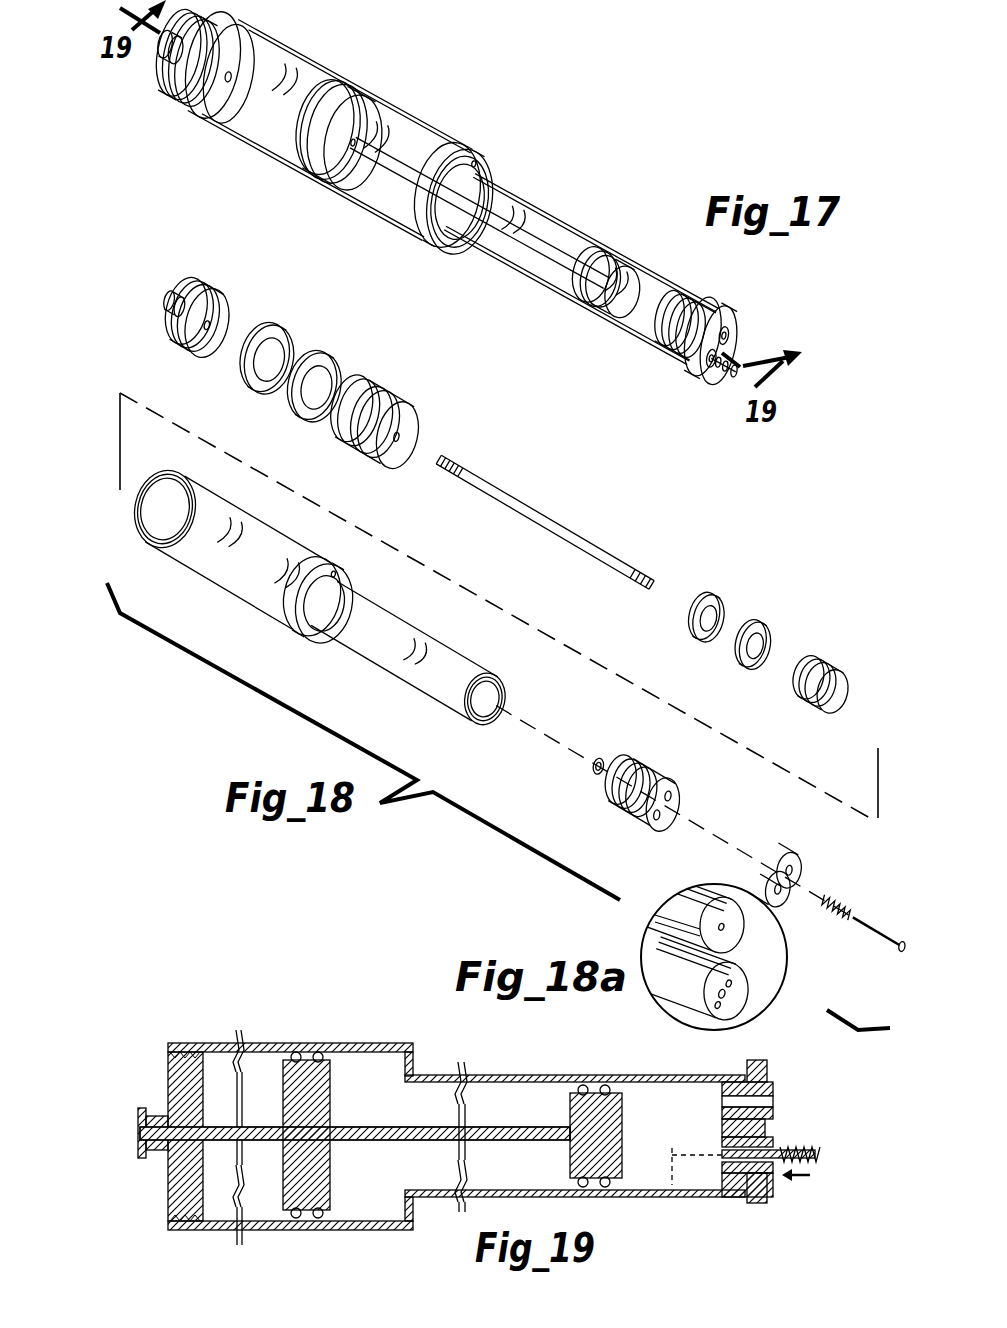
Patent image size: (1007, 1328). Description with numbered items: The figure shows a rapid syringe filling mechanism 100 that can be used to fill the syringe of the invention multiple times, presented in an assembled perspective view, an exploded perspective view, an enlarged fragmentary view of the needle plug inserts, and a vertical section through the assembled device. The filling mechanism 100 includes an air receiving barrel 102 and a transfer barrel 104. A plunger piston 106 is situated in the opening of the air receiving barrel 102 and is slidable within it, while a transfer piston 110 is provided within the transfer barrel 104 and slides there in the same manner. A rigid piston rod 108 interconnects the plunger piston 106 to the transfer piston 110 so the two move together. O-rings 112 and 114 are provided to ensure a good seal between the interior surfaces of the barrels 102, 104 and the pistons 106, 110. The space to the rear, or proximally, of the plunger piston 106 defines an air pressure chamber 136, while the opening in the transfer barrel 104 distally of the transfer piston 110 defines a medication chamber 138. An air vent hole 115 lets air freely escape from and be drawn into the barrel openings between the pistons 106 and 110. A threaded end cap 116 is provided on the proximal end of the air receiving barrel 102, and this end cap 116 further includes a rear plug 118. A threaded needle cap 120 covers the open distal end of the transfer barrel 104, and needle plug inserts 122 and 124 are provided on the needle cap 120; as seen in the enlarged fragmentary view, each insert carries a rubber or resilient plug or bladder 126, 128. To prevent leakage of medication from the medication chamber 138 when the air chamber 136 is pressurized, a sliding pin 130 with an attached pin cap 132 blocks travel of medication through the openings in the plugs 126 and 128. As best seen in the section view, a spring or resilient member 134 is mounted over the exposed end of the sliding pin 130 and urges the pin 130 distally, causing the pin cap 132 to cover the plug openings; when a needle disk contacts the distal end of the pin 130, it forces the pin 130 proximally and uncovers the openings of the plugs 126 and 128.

In FIG. 17, the filling mechanism 100 is at (532, 134).
In FIG. 17, the air receiving barrel 102 is at (395, 35).
In FIG. 18, the air receiving barrel 102 is at (243, 611).
In FIG. 19, the air receiving barrel 102 is at (286, 1042).
In FIG. 17, the transfer barrel 104 is at (652, 272).
In FIG. 18, the transfer barrel 104 is at (406, 672).
In FIG. 19, the transfer barrel 104 is at (552, 1075).
In FIG. 17, the plunger piston 106 is at (354, 175).
In FIG. 18, the plunger piston 106 is at (410, 426).
In FIG. 19, the plunger piston 106 is at (284, 1195).
In FIG. 17, the rigid piston rod 108 is at (525, 247).
In FIG. 18, the rigid piston rod 108 is at (504, 495).
In FIG. 19, the rigid piston rod 108 is at (396, 1141).
In FIG. 17, the transfer piston 110 is at (616, 312).
In FIG. 18, the transfer piston 110 is at (843, 686).
In FIG. 19, the transfer piston 110 is at (623, 1121).
In FIG. 17, the O-rings 112 is at (314, 167).
In FIG. 18, the O-rings 112 is at (316, 368).
In FIG. 19, the O-rings 112 is at (312, 1212).
In FIG. 17, the O-rings 114 is at (602, 296).
In FIG. 18, the O-rings 114 is at (752, 628).
In FIG. 19, the O-rings 114 is at (586, 1188).
In FIG. 17, the air vent hole 115 is at (458, 162).
In FIG. 18, the air vent hole 115 is at (332, 592).
In FIG. 17, the threaded end cap 116 is at (212, 102).
In FIG. 18, the threaded end cap 116 is at (208, 348).
In FIG. 19, the threaded end cap 116 is at (192, 1075).
In FIG. 17, the rear plug 118 is at (168, 50).
In FIG. 18, the rear plug 118 is at (172, 303).
In FIG. 19, the rear plug 118 is at (168, 1118).
In FIG. 18, the threaded needle cap 120 is at (652, 808).
In FIG. 19, the threaded needle cap 120 is at (768, 1064).
In FIG. 18, the needle plug insert 122 is at (797, 842).
In FIG. 18A, the needle plug insert 122 is at (730, 930).
In FIG. 19, the needle plug insert 122 is at (774, 1102).
In FIG. 18, the needle plug insert 124 is at (800, 866).
In FIG. 18A, the needle plug insert 124 is at (742, 988).
In FIG. 19, the needle plug insert 124 is at (774, 1140).
In FIG. 18A, the resilient plug 126 is at (691, 860).
In FIG. 19, the resilient plug 126 is at (720, 1100).
In FIG. 18A, the resilient plug 128 is at (674, 952).
In FIG. 18, the sliding pin 130 is at (893, 940).
In FIG. 19, the sliding pin 130 is at (826, 1156).
In FIG. 18, the pin cap 132 is at (596, 776).
In FIG. 19, the pin cap 132 is at (676, 1185).
In FIG. 18, the spring 134 is at (830, 906).
In FIG. 19, the spring 134 is at (812, 1160).
In FIG. 17, the air pressure chamber 136 is at (272, 146).
In FIG. 17, the medication chamber 138 is at (652, 335).